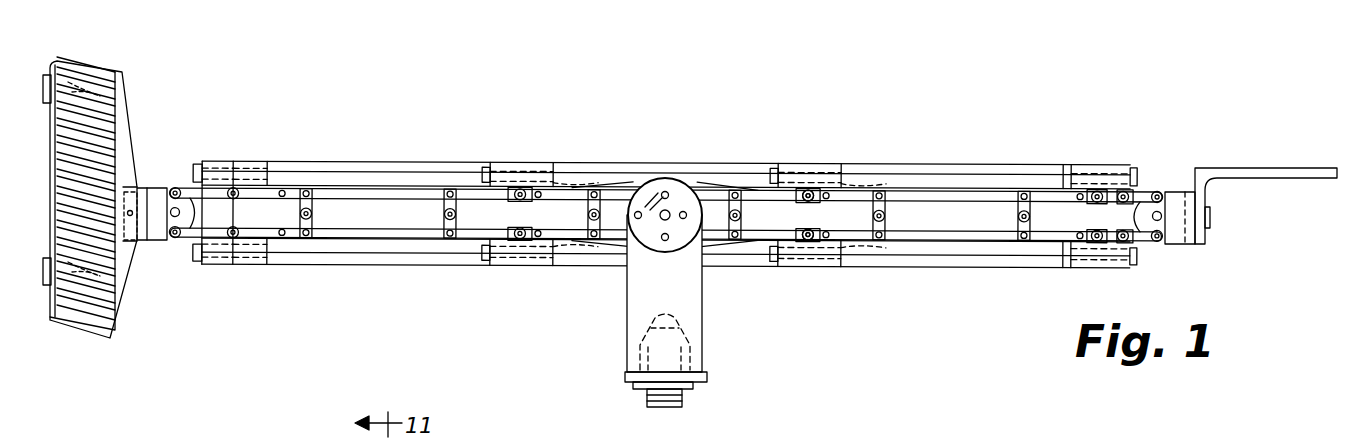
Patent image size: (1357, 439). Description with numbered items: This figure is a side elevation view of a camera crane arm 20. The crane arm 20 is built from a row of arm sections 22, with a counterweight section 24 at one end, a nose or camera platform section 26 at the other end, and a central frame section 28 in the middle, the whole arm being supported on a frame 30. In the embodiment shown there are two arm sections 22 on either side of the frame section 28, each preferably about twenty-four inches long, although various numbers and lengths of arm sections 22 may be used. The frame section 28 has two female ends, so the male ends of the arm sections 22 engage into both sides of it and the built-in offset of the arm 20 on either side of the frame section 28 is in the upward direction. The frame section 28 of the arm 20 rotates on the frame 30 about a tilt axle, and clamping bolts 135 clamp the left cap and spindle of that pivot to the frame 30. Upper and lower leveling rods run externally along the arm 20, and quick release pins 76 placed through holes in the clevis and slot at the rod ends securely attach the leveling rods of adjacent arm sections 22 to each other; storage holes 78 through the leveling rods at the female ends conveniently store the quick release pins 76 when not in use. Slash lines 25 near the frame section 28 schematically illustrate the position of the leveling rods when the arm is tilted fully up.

The crane arm 20 is at (735, 88).
The arm section 22 is at (371, 270).
The counterweight section 24 is at (148, 178).
The slash lines 25 is at (651, 198).
The nose or camera platform section 26 is at (1176, 179).
The frame section 28 is at (592, 269).
The frame 30 is at (703, 318).
The quick release pins 76 is at (808, 240).
The storage holes 78 is at (282, 240).
The clamping bolts 135 is at (683, 206).